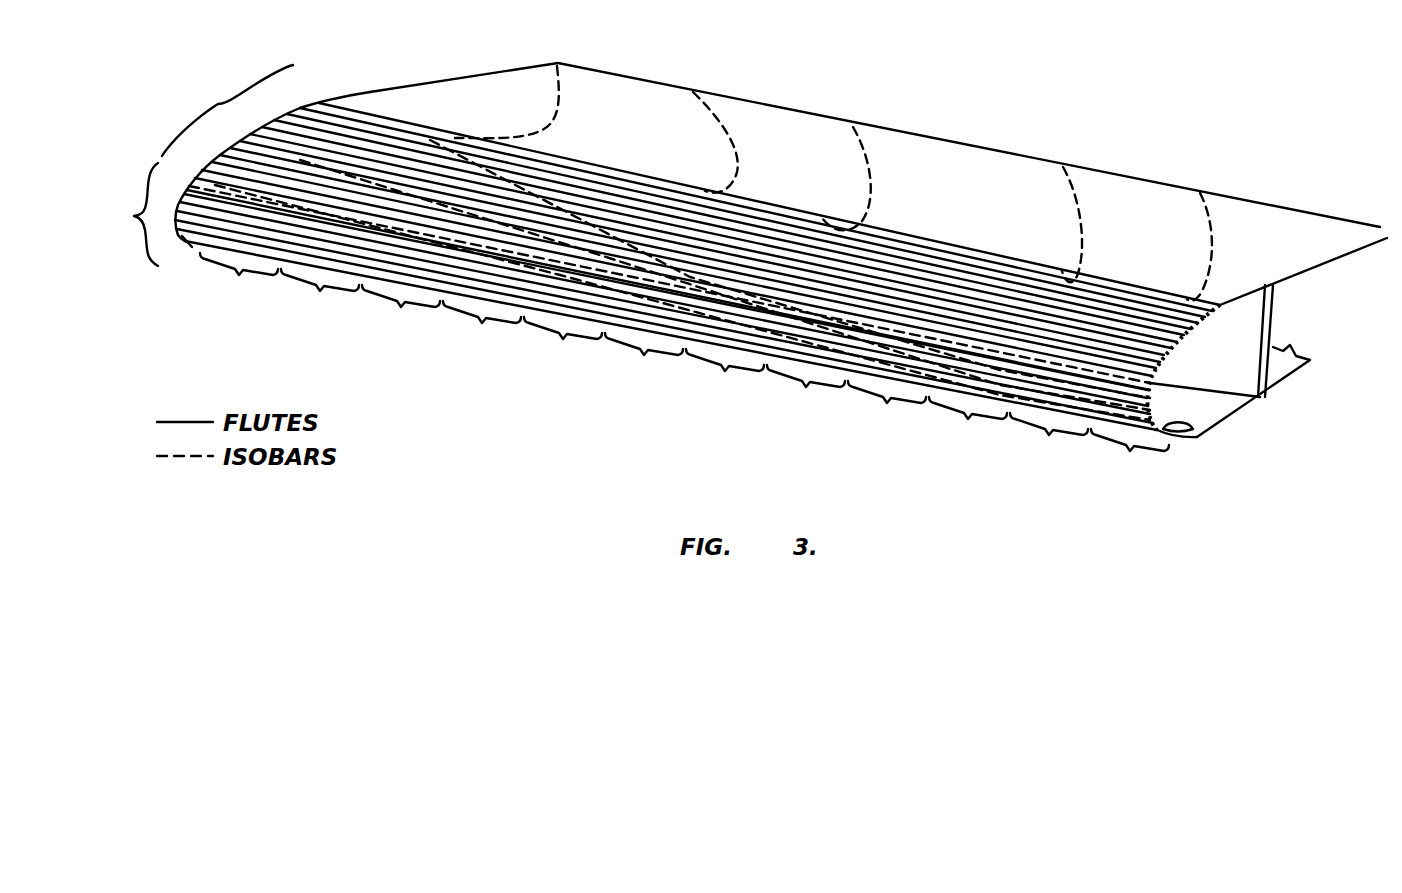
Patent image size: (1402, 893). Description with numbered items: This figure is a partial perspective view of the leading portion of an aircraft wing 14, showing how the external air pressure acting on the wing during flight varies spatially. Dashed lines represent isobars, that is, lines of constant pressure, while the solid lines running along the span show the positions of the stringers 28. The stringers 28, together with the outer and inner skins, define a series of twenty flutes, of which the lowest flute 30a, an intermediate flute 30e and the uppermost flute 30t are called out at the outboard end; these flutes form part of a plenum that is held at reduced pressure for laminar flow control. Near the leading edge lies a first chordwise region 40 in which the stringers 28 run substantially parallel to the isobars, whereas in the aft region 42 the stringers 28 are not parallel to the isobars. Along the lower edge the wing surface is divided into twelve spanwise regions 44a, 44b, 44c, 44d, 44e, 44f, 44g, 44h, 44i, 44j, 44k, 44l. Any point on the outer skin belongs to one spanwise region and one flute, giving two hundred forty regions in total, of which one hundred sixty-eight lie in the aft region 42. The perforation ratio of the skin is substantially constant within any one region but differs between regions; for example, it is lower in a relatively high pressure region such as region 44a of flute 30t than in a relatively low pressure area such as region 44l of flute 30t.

The wing 14 is at (1258, 217).
The stringers 28 is at (188, 243).
The flute 30t is at (1220, 308).
The flute 30e is at (1157, 414).
The flute 30a is at (1193, 433).
The first chordwise region 40 is at (133, 216).
The aft region 42 is at (218, 103).
The spanwise region 44a is at (238, 279).
The spanwise region 44b is at (317, 297).
The spanwise region 44c is at (401, 313).
The spanwise region 44d is at (482, 330).
The spanwise region 44e is at (563, 347).
The spanwise region 44f is at (644, 362).
The spanwise region 44g is at (725, 378).
The spanwise region 44h is at (806, 397).
The spanwise region 44i is at (887, 413).
The spanwise region 44j is at (968, 424).
The spanwise region 44k is at (1049, 445).
The spanwise region 44l is at (1130, 455).